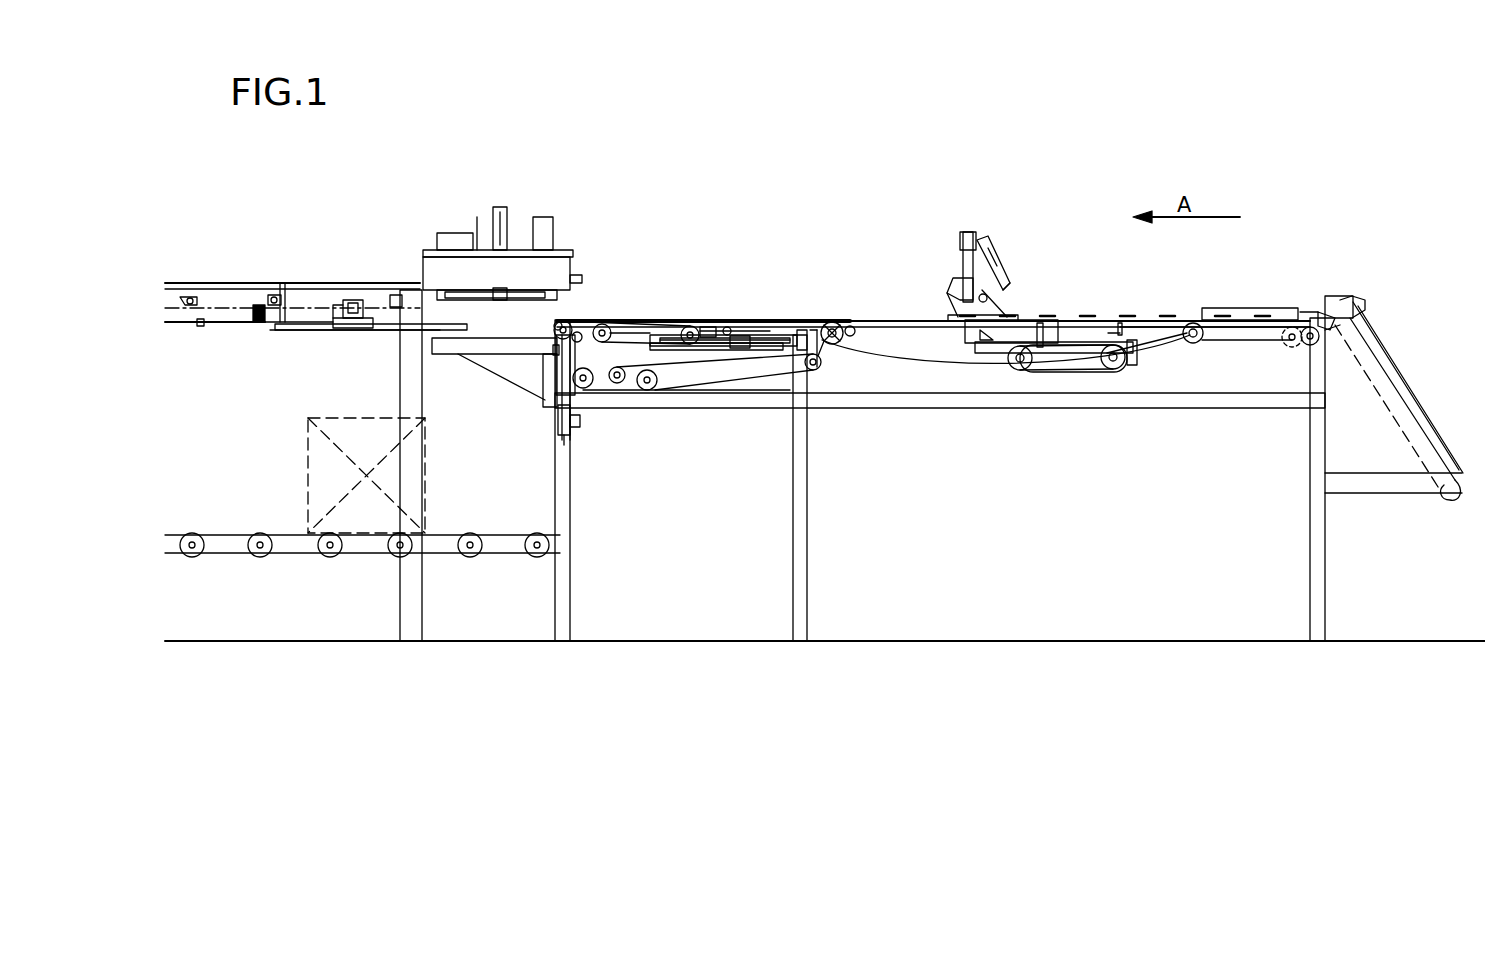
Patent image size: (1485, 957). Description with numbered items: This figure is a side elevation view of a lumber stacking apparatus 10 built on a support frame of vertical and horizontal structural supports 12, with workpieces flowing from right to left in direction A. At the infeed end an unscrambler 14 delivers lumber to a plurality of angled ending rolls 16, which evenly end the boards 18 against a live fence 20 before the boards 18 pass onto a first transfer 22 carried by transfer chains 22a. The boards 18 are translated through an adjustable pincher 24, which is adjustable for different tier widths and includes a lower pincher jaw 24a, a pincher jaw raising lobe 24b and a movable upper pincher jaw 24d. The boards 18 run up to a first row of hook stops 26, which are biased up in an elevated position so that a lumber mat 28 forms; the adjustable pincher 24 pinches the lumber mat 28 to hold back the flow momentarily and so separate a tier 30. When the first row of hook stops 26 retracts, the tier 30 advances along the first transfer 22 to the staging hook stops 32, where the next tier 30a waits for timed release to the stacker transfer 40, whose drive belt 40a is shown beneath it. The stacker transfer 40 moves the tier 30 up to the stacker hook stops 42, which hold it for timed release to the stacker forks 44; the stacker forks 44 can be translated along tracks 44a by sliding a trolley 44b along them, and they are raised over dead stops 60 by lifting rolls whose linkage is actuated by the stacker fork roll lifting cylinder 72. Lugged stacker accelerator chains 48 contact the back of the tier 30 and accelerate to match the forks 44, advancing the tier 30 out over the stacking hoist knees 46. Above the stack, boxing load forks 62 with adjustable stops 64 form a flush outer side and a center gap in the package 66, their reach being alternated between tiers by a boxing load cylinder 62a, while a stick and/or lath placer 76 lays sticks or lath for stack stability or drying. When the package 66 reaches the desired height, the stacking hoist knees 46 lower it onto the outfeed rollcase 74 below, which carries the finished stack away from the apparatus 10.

The apparatus 10 is at (772, 212).
The structural supports 12 is at (580, 522).
The unscrambler 14 is at (1405, 393).
The angled ending rolls 16 is at (1230, 325).
The boards 18 is at (1320, 316).
The live fence 20 is at (1265, 310).
The first transfer 22 is at (1140, 328).
The transfer chains 22a is at (1140, 345).
The adjustable pincher 24 is at (1017, 248).
The lower pincher jaw 24a is at (985, 326).
The pincher jaw raising lobe 24b is at (1058, 372).
The movable upper pincher jaw 24d is at (1025, 318).
The first row of hook stops 26 is at (820, 328).
The lumber mat 28 is at (887, 330).
The tier 30 is at (632, 343).
The next tier 30a is at (775, 330).
The staging hook stops 32 is at (706, 322).
The stacker transfer 40 is at (700, 330).
The drive belt 40a is at (695, 372).
The stacker hook stops 42 is at (560, 318).
The stacker forks 44 is at (757, 335).
The tracks 44a is at (745, 348).
The trolley 44b is at (797, 352).
The stacking hoist knees 46 is at (500, 355).
The lugged stacker accelerator chains 48 is at (648, 332).
The dead stops 60 is at (558, 330).
The boxing load forks 62 is at (462, 325).
The boxing load cylinder 62a is at (222, 320).
The adjustable stops 64 is at (440, 337).
The package 66 is at (372, 425).
The stacker fork roll lifting cylinder 72 is at (580, 440).
The outfeed rollcase 74 is at (233, 535).
The stick and/or lath placer 76 is at (517, 271).